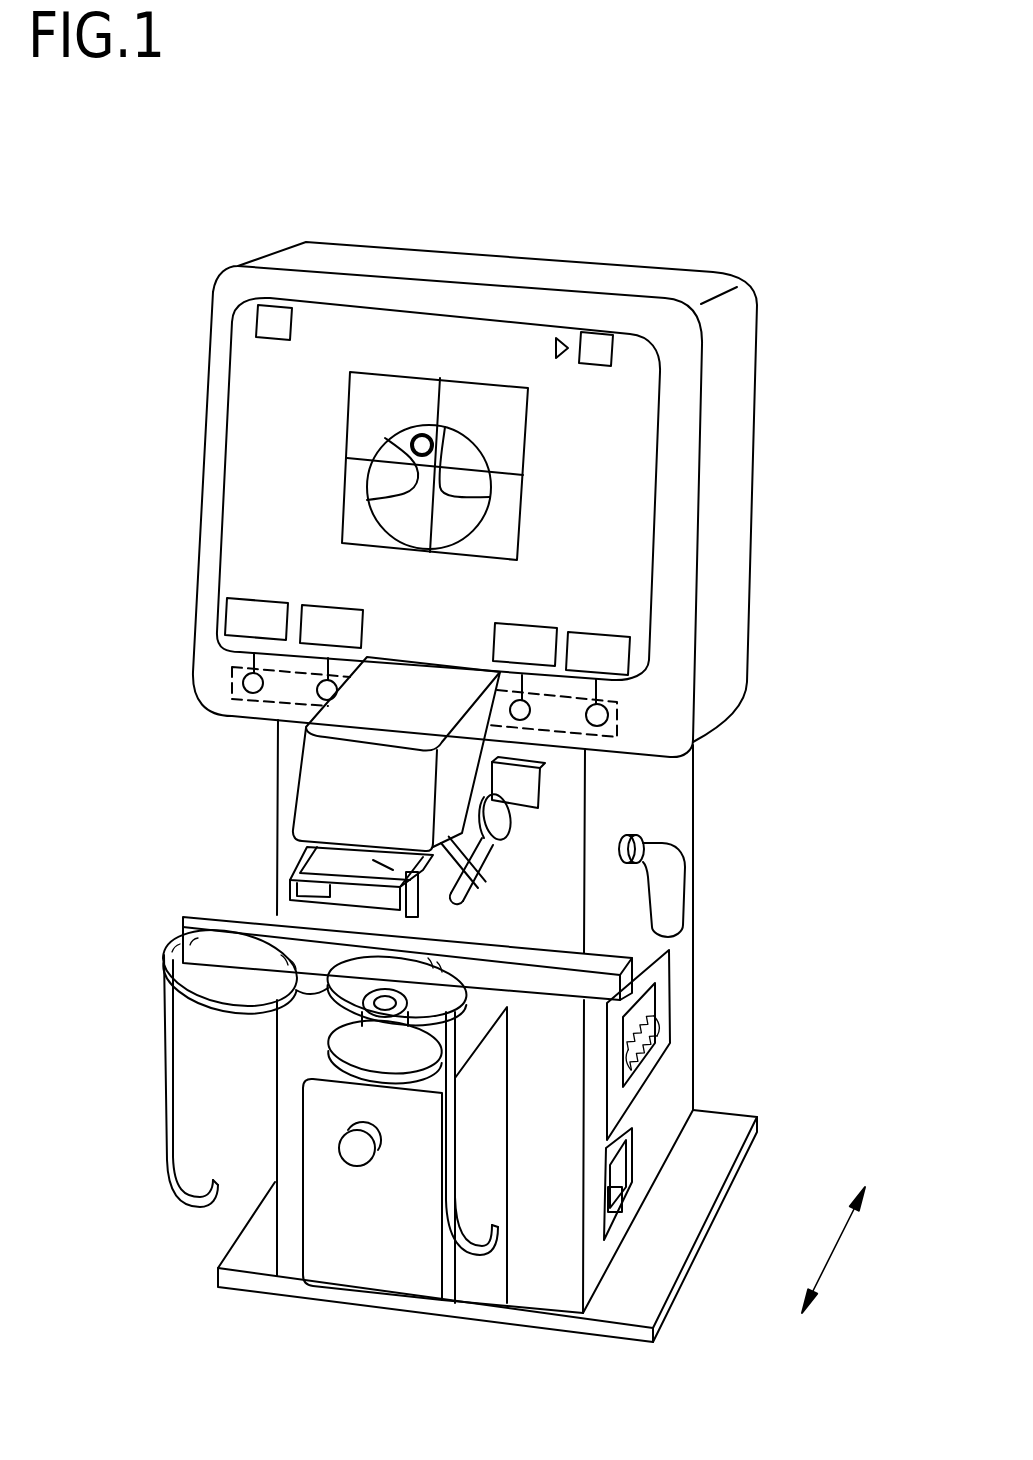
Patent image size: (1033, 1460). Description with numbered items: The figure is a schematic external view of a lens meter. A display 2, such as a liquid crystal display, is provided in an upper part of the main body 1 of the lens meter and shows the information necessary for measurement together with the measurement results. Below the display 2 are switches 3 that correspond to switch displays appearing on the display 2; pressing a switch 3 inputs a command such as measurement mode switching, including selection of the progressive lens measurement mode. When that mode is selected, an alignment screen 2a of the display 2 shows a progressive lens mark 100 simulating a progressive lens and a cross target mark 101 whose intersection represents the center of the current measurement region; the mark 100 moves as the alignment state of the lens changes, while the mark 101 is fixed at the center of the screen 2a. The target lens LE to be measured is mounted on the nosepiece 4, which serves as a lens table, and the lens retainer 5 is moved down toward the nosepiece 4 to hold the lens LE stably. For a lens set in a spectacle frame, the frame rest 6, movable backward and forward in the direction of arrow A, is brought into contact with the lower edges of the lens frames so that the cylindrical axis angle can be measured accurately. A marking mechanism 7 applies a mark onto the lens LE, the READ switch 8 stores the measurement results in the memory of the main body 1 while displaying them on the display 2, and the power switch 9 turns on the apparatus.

The main body 1 is at (636, 221).
The display 2 is at (255, 553).
The alignment screen 2a is at (412, 428).
The switch 3 is at (230, 669).
The nosepiece 4 is at (343, 1043).
The lens retainer 5 is at (294, 876).
The frame rest 6 is at (198, 927).
The marking mechanism 7 is at (497, 857).
The READ switch 8 is at (352, 1153).
The power switch 9 is at (617, 1188).
The progressive lens mark 100 is at (437, 462).
The cross target mark 101 is at (443, 462).
The target lens LE is at (417, 977).
The arrow A is at (841, 1250).